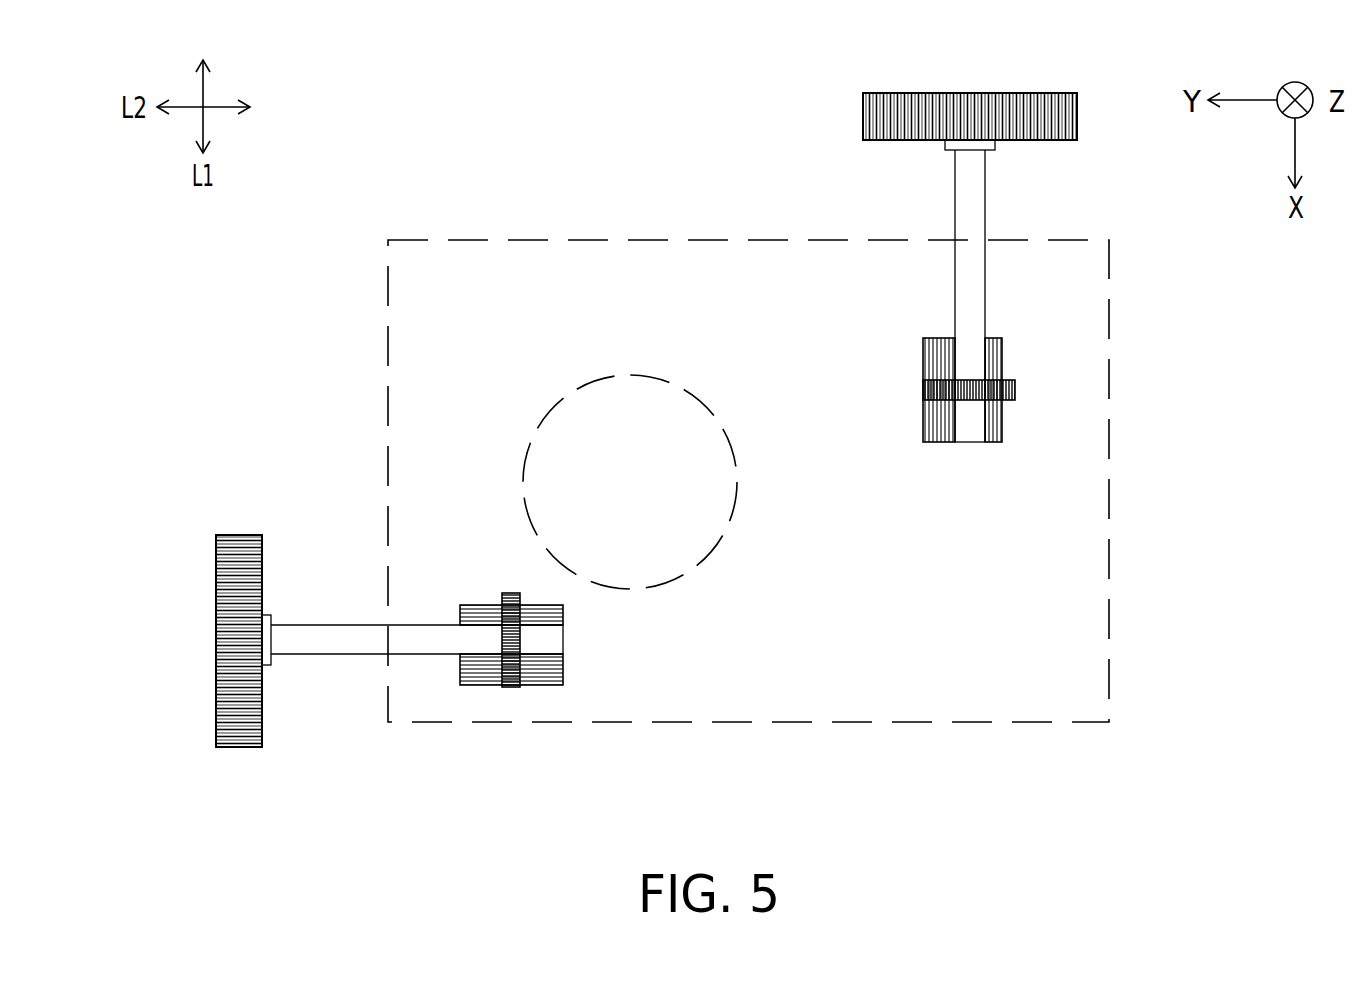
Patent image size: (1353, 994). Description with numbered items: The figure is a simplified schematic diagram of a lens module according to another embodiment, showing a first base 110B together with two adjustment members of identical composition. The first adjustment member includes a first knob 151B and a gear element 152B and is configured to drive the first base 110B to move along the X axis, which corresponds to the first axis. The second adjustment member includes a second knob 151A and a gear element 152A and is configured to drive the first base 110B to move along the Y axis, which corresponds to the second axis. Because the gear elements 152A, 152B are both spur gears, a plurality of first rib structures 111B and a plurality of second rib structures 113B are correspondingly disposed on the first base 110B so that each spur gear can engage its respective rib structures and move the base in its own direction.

The first base 110B is at (1109, 482).
The second knob 151A is at (866, 97).
The first knob 151B is at (217, 530).
The second rib structures 113B is at (1005, 340).
The gear element 152A is at (1015, 392).
The gear element 152B is at (512, 592).
The first rib structures 111B is at (487, 685).